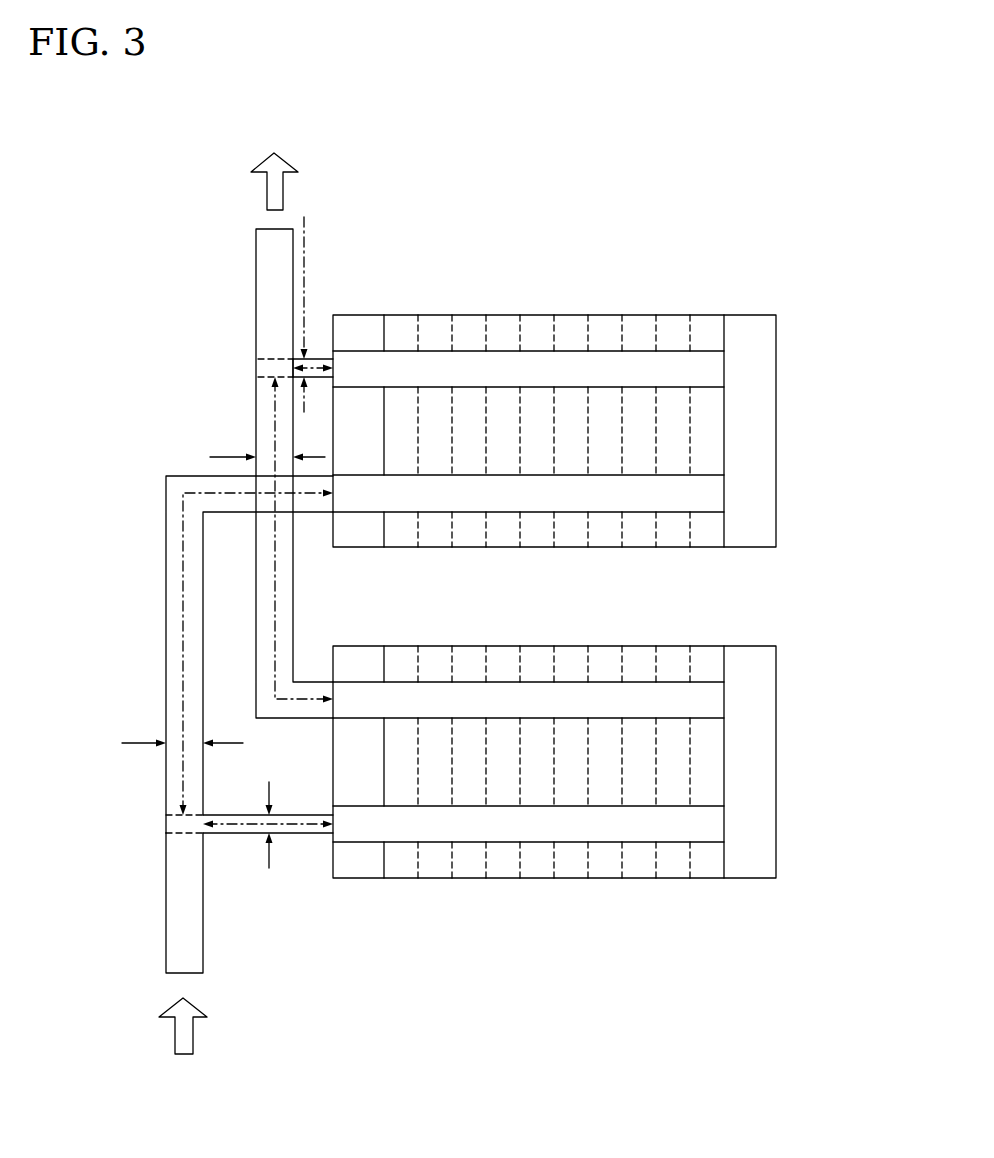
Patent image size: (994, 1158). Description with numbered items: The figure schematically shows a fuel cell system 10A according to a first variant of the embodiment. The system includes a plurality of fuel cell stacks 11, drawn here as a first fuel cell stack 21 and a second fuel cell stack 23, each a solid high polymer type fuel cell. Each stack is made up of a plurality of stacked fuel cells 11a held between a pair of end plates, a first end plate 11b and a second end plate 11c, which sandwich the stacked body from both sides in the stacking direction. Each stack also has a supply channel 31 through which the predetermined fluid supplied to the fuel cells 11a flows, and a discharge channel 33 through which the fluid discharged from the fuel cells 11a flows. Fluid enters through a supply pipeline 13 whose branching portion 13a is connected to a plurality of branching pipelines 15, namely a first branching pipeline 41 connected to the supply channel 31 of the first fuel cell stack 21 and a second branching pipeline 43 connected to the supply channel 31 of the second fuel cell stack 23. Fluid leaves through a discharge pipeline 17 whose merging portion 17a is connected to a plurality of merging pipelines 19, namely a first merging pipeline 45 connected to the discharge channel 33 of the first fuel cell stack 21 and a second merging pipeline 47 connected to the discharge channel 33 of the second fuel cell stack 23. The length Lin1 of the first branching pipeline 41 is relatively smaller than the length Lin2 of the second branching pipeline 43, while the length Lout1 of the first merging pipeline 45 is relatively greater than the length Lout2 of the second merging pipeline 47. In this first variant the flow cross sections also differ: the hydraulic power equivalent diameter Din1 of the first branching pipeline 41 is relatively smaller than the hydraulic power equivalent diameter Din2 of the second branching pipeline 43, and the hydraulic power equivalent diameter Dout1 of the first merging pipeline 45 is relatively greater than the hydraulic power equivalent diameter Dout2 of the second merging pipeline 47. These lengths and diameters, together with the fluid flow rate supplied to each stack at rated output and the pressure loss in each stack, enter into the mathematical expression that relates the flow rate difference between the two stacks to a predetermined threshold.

The fuel cell system 10A is at (690, 184).
The fuel cell stacks 11 is at (590, 554).
The second fuel cell stack 23 is at (780, 311).
The first fuel cell stack 21 is at (780, 642).
The fuel cells 11a is at (505, 535).
The first end plate 11b is at (362, 535).
The second end plate 11c is at (750, 535).
The supply channel 31 is at (575, 502).
The discharge channel 33 is at (640, 365).
The discharge pipeline 17 is at (256, 276).
The merging portion 17a is at (258, 363).
The merging pipelines 19 is at (262, 328).
The first merging pipeline 45 is at (256, 396).
The second merging pipeline 47 is at (320, 358).
The branching pipelines 15 is at (185, 718).
The second branching pipeline 43 is at (166, 641).
The first branching pipeline 41 is at (287, 835).
The supply pipeline 13 is at (166, 926).
The branching portion 13a is at (166, 821).
The hydraulic power equivalent diameter of the second merging pipeline Dout2 is at (305, 238).
The length of the second merging pipeline Lout2 is at (313, 372).
The length of the first merging pipeline Lout1 is at (275, 431).
The hydraulic power equivalent diameter of the first merging pipeline Dout1 is at (231, 457).
The length of the second branching pipeline Lin2 is at (183, 691).
The length of the first branching pipeline Lin1 is at (243, 832).
The hydraulic power equivalent diameter of the first branching pipeline Din1 is at (262, 814).
The hydraulic power equivalent diameter of the second branching pipeline Din2 is at (150, 745).